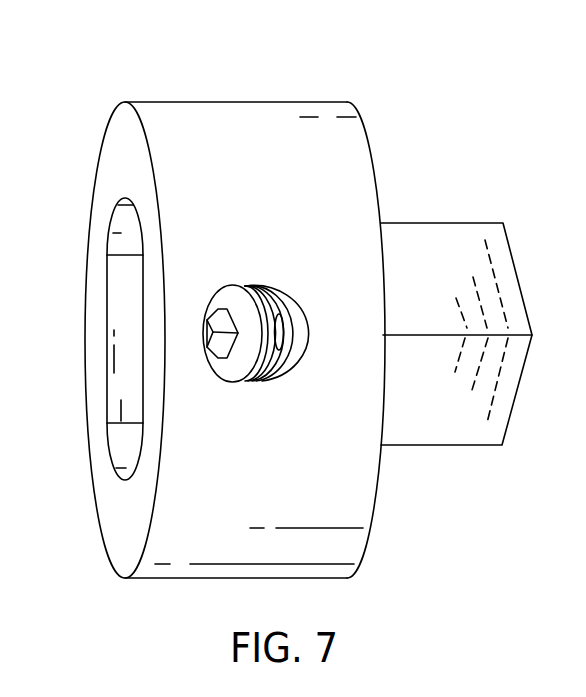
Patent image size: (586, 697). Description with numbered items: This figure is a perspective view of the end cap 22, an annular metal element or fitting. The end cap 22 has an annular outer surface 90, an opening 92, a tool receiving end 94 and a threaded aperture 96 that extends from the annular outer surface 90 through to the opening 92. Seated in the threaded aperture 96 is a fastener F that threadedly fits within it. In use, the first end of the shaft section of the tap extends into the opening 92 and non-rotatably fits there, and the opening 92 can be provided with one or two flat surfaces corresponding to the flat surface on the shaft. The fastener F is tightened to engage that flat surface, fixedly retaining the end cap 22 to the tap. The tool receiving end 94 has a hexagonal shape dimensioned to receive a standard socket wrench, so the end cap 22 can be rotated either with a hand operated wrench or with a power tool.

The end cap 22 is at (290, 66).
The annular outer surface 90 is at (333, 190).
The opening 92 is at (125, 310).
The tool receiving end 94 is at (438, 407).
The threaded aperture 96 is at (270, 312).
The fastener F is at (240, 352).